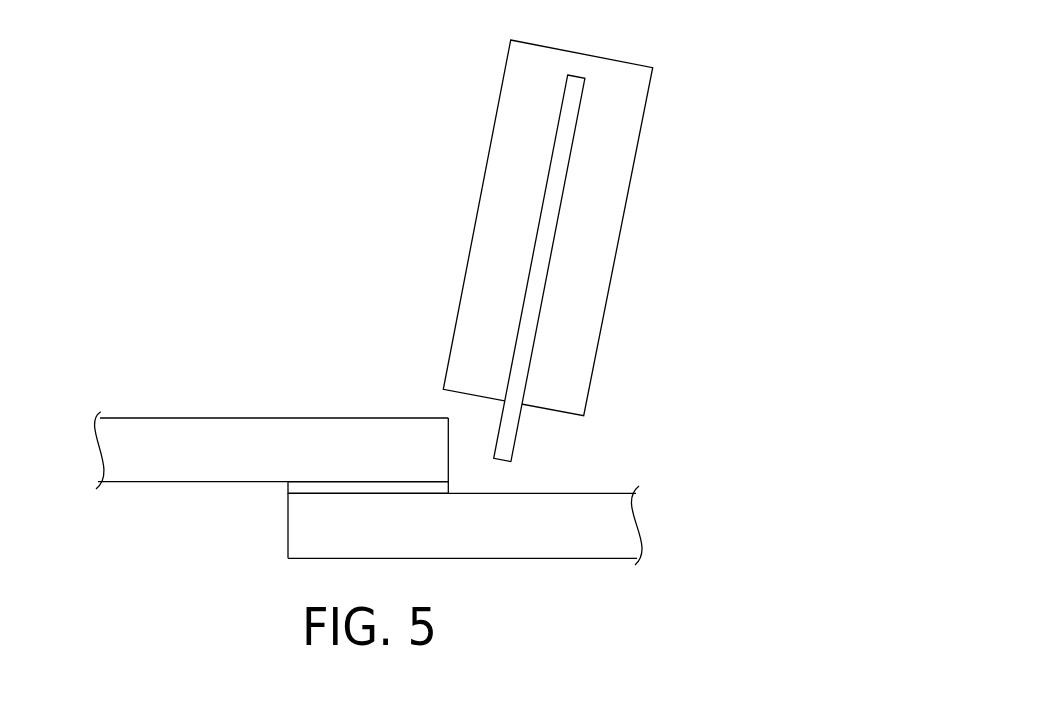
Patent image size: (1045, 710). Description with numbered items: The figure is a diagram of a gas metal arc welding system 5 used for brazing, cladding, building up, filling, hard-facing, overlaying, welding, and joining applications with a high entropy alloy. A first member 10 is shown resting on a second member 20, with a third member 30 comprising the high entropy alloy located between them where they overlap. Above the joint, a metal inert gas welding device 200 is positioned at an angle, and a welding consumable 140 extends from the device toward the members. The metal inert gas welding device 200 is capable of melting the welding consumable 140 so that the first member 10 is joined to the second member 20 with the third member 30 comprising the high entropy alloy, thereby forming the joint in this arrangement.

The assembly 5 is at (186, 523).
The first member 10 is at (147, 416).
The second member 20 is at (547, 558).
The third member 30 is at (335, 487).
The welding consumable 140 is at (511, 433).
The metal inert gas welding device 200 is at (430, 213).